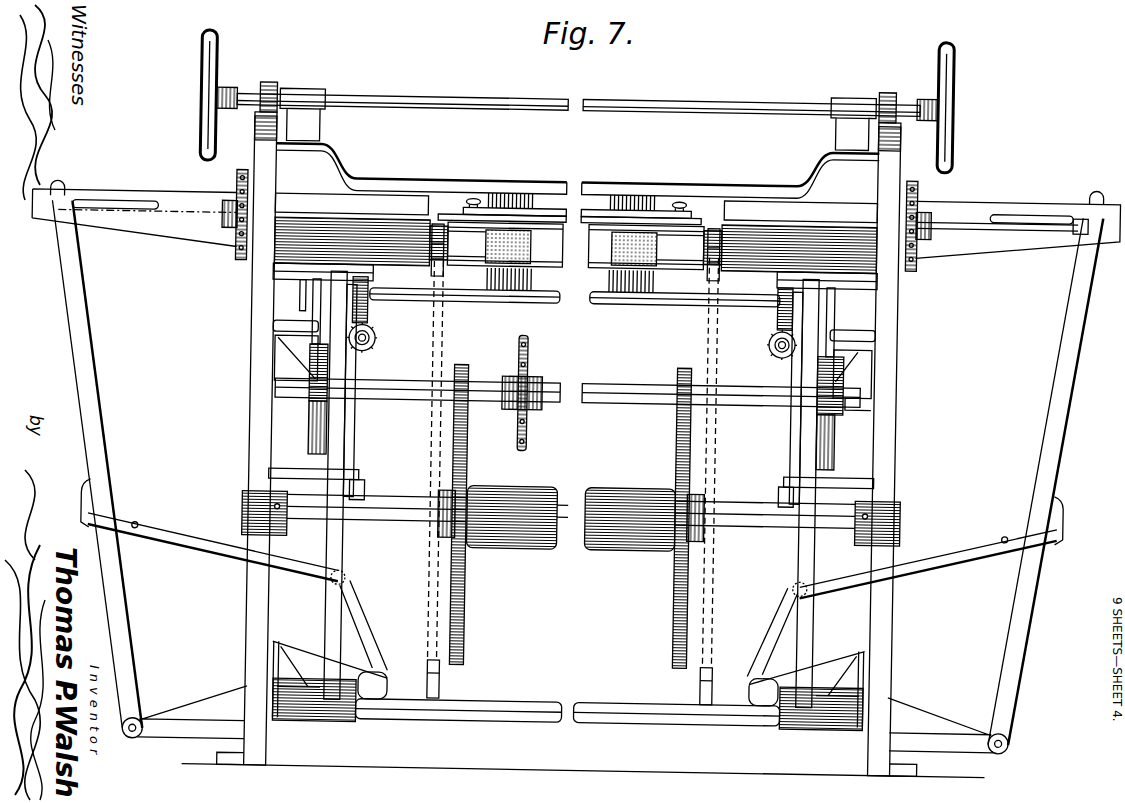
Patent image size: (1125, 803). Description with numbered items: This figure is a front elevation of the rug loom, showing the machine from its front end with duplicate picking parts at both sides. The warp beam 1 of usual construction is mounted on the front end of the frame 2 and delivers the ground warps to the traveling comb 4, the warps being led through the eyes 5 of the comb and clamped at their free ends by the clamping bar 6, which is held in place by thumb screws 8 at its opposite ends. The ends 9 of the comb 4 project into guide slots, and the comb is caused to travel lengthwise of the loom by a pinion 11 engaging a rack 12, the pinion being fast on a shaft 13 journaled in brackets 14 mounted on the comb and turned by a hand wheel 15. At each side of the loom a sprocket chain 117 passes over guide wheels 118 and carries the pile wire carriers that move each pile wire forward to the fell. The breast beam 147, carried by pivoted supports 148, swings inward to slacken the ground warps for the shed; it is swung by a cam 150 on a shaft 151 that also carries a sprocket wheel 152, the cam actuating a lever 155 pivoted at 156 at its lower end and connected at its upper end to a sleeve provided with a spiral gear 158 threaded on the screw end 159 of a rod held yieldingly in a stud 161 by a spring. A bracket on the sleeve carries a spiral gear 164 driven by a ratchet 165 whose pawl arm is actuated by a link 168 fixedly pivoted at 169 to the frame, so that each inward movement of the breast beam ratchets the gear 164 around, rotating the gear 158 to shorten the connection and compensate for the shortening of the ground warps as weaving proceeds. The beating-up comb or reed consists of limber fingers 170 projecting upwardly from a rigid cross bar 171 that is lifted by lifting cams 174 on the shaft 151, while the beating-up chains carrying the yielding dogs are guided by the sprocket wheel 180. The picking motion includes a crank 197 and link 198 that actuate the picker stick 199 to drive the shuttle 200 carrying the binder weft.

The warp beam 1 is at (516, 546).
The frame 2 is at (255, 634).
The traveling comb 4 is at (568, 176).
The eyes 5 is at (540, 197).
The clamping bar 6 is at (560, 216).
The thumb screws 8 is at (468, 203).
The ends of the comb 9 is at (306, 150).
The pinion 11 is at (262, 82).
The rack 12 is at (258, 116).
The shaft 13 is at (587, 93).
The brackets 14 is at (322, 127).
The hand wheel 15 is at (218, 48).
The sprocket chain 117 is at (437, 458).
The guide wheels 118 is at (440, 266).
The breast beam 147 is at (548, 260).
The supports 148 is at (352, 548).
The cam 150 is at (314, 440).
The shaft 151 is at (567, 388).
The sprocket wheel 152 is at (536, 434).
The lever 155 is at (360, 448).
The pivot 156 is at (372, 486).
The spiral gear 158 is at (378, 344).
The screw end 159 is at (374, 336).
The stud 161 is at (370, 350).
The spiral gear 164 is at (372, 316).
The ratchet 165 is at (262, 312).
The link 168 is at (280, 340).
The pivot 169 is at (278, 326).
The fingers 170 is at (545, 298).
The cross bar 171 is at (556, 300).
The lifting cams 174 is at (314, 410).
The sprocket wheel 180 is at (240, 255).
The crank 197 is at (380, 622).
The link 198 is at (196, 556).
The picker stick 199 is at (104, 433).
The shuttle 200 is at (170, 204).